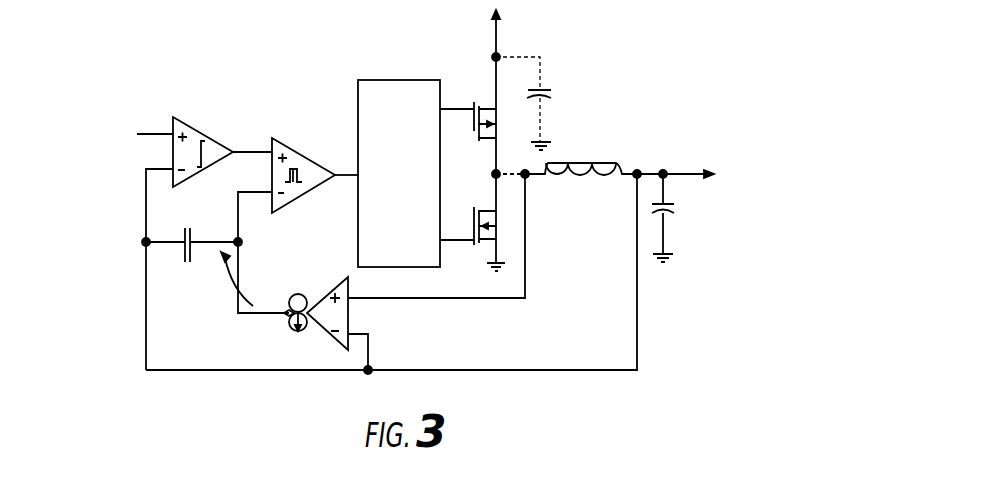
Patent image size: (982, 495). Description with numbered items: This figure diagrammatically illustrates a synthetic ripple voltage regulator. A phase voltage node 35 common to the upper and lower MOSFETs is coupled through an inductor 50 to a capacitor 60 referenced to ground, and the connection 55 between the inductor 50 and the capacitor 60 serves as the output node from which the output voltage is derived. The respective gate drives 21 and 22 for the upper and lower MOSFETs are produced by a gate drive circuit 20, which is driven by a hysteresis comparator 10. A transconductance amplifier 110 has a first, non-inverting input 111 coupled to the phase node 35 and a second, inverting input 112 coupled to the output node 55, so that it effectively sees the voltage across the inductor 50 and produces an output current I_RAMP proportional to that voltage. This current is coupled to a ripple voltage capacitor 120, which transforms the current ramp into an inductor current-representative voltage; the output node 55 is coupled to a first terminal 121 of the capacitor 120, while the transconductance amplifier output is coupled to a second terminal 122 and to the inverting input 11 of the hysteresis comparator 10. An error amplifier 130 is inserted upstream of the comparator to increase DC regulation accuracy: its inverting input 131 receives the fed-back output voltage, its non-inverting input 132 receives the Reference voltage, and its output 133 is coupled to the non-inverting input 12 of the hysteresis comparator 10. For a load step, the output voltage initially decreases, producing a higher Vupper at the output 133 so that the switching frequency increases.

The hysteresis comparator 10 is at (307, 153).
The inverting input of hysteresis comparator 11 is at (272, 197).
The non-inverting input of hysteresis comparator 12 is at (270, 157).
The gate drive circuit 20 is at (408, 80).
The upper gate drive 21 is at (442, 108).
The lower gate drive 22 is at (441, 241).
The phase voltage node 35 is at (494, 174).
The inductor 50 is at (600, 163).
The output node 55 is at (637, 165).
The capacitor 60 is at (684, 205).
The transconductance amplifier 110 is at (331, 289).
The non-inverting input of transconductance amplifier 111 is at (350, 296).
The inverting input of transconductance amplifier 112 is at (350, 343).
The ripple voltage capacitor 120 is at (186, 227).
The first terminal of capacitor 121 is at (146, 243).
The second terminal of capacitor 122 is at (206, 240).
The error amplifier 130 is at (213, 138).
The inverting input of error amplifier 131 is at (147, 165).
The non-inverting input of error amplifier 132 is at (142, 135).
The output of error amplifier 133 is at (234, 149).